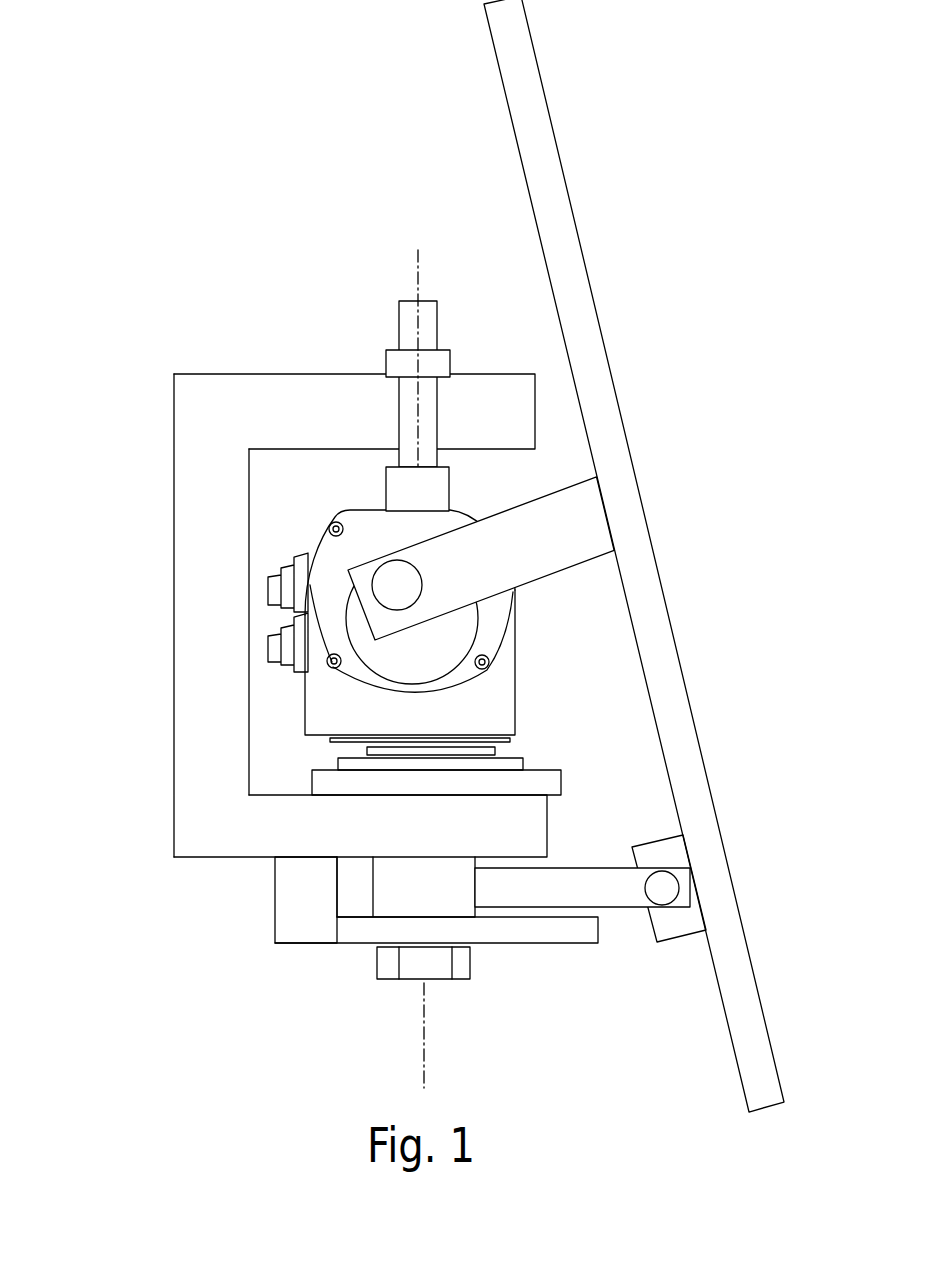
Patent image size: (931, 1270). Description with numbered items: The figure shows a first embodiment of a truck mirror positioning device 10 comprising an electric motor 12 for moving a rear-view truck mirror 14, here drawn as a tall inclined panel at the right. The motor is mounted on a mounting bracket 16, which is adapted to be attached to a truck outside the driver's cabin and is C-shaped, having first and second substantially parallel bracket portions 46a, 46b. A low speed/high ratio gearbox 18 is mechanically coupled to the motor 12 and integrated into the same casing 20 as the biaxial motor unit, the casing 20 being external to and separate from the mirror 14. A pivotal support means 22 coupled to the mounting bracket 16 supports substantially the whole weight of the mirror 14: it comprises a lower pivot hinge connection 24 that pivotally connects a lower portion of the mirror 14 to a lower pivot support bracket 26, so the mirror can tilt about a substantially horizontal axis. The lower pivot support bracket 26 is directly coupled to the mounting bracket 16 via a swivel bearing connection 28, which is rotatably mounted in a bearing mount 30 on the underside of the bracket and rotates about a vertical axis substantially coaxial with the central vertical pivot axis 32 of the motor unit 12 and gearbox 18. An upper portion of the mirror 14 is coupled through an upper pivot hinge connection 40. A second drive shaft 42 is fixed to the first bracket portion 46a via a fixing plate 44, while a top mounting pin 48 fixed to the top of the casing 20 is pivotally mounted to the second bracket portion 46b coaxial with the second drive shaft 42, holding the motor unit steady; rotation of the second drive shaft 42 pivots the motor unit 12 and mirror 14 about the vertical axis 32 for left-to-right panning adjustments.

The truck mirror positioning device 10 is at (127, 380).
The electric motor 12 is at (513, 603).
The rear-view truck mirror 14 is at (617, 387).
The mounting bracket 16 is at (327, 608).
The gearbox 18 is at (513, 698).
The casing 20 is at (345, 521).
The pivotal support means 22 is at (536, 958).
The lower pivot hinge connection 24 is at (688, 946).
The lower pivot support bracket 26 is at (590, 868).
The swivel bearing connection 28 is at (363, 890).
The bearing mount 30 is at (275, 917).
The central vertical pivot axis 32 is at (425, 1040).
The upper pivot hinge connection 40 is at (593, 472).
The second drive shaft 42 is at (342, 752).
The fixing plate 44 is at (520, 762).
The first bracket portion 46a is at (213, 857).
The second bracket portion 46b is at (297, 374).
The top mounting pin 48 is at (437, 322).